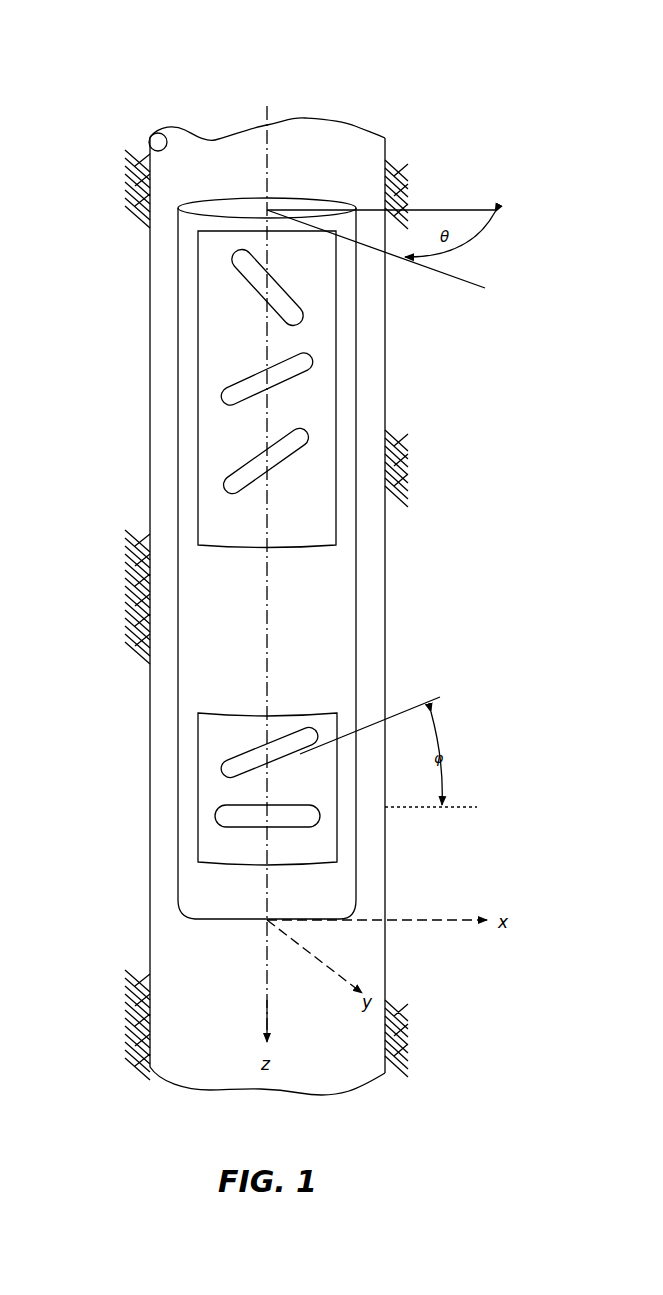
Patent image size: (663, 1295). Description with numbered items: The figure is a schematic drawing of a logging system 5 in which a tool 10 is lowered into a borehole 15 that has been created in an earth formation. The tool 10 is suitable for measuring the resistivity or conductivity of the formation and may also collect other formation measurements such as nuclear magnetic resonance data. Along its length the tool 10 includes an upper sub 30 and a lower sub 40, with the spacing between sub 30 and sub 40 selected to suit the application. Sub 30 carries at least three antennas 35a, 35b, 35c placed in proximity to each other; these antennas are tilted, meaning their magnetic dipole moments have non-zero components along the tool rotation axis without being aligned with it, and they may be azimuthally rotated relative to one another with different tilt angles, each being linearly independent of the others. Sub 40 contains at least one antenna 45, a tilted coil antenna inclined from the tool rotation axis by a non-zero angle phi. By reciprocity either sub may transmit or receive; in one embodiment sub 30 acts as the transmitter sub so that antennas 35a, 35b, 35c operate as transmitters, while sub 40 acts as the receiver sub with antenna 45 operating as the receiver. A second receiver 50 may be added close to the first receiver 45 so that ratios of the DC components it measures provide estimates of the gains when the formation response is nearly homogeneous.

The logging system 5 is at (463, 102).
The tool 10 is at (327, 197).
The borehole 15 is at (157, 132).
The sub 30 is at (337, 473).
The antenna 35a is at (233, 277).
The antenna 35b is at (222, 400).
The antenna 35c is at (226, 480).
The sub 40 is at (337, 843).
The antenna 45 is at (228, 758).
The second receiver 50 is at (215, 816).